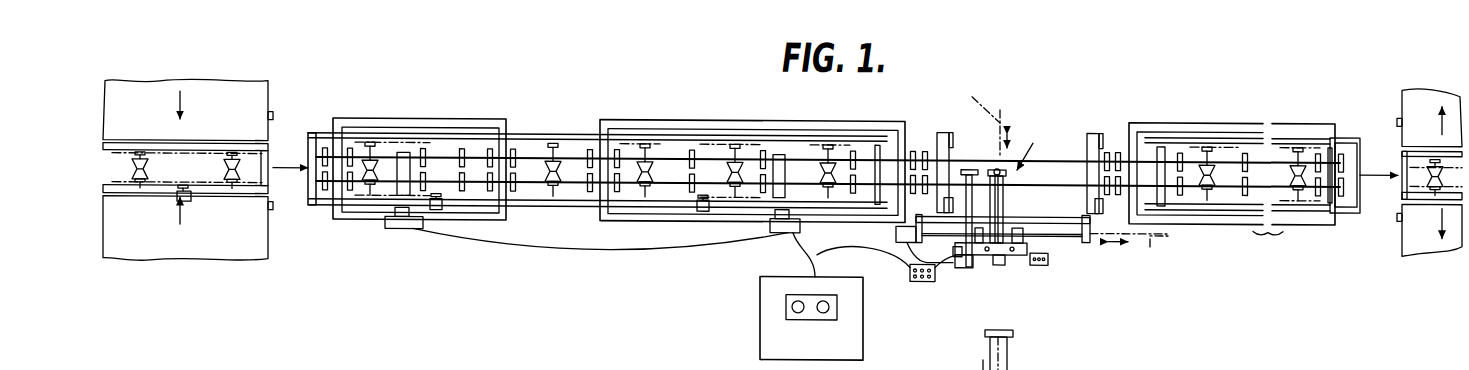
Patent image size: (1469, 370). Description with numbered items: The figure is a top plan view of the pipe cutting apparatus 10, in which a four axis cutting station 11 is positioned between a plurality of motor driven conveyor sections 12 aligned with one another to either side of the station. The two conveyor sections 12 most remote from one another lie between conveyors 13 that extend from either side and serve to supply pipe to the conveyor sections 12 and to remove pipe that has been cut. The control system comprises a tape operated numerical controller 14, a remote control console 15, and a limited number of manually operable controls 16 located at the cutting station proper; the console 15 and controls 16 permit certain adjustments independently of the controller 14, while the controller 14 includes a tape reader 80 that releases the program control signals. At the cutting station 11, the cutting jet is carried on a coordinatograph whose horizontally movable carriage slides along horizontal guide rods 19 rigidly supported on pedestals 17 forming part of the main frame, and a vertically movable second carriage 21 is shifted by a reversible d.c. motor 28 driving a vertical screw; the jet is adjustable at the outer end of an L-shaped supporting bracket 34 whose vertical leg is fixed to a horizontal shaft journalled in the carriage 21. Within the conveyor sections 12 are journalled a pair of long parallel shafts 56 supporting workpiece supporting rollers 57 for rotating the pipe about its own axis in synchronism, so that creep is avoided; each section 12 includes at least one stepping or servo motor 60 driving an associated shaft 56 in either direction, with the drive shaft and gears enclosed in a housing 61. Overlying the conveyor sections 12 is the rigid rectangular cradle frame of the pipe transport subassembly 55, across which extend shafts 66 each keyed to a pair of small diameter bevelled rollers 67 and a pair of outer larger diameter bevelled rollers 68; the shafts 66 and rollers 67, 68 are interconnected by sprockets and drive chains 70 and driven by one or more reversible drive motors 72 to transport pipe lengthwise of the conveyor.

The cutting apparatus 10 is at (1158, 100).
The four axis cutting station 11 is at (1034, 227).
The motor driven conveyor section 12 is at (218, 138).
The conveyor 13 is at (248, 79).
The tape operated numerical controller 14 is at (788, 318).
The remote control console 15 is at (922, 277).
The manually operable controls 16 is at (1050, 259).
The pedestal 17 is at (1090, 236).
The horizontal guide rod 19 is at (1058, 233).
The vertically movable second carriage 21 is at (1015, 247).
The reversible d.c. motor 28 is at (963, 263).
The L-shaped supporting bracket 34 is at (1003, 202).
The pipe transport subassembly 55 is at (542, 122).
The long parallel shaft 56 is at (665, 179).
The workpiece supporting roller 57 is at (590, 160).
The stepping or servo motor 60 is at (407, 228).
The housing 61 is at (395, 208).
The shaft 66 is at (368, 148).
The small diameter bevelled roller 67 is at (825, 162).
The outer larger diameter bevelled roller 68 is at (816, 144).
The drive chain 70 is at (135, 152).
The reversible drive motor 72 is at (438, 207).
The tape reader 80 is at (800, 315).